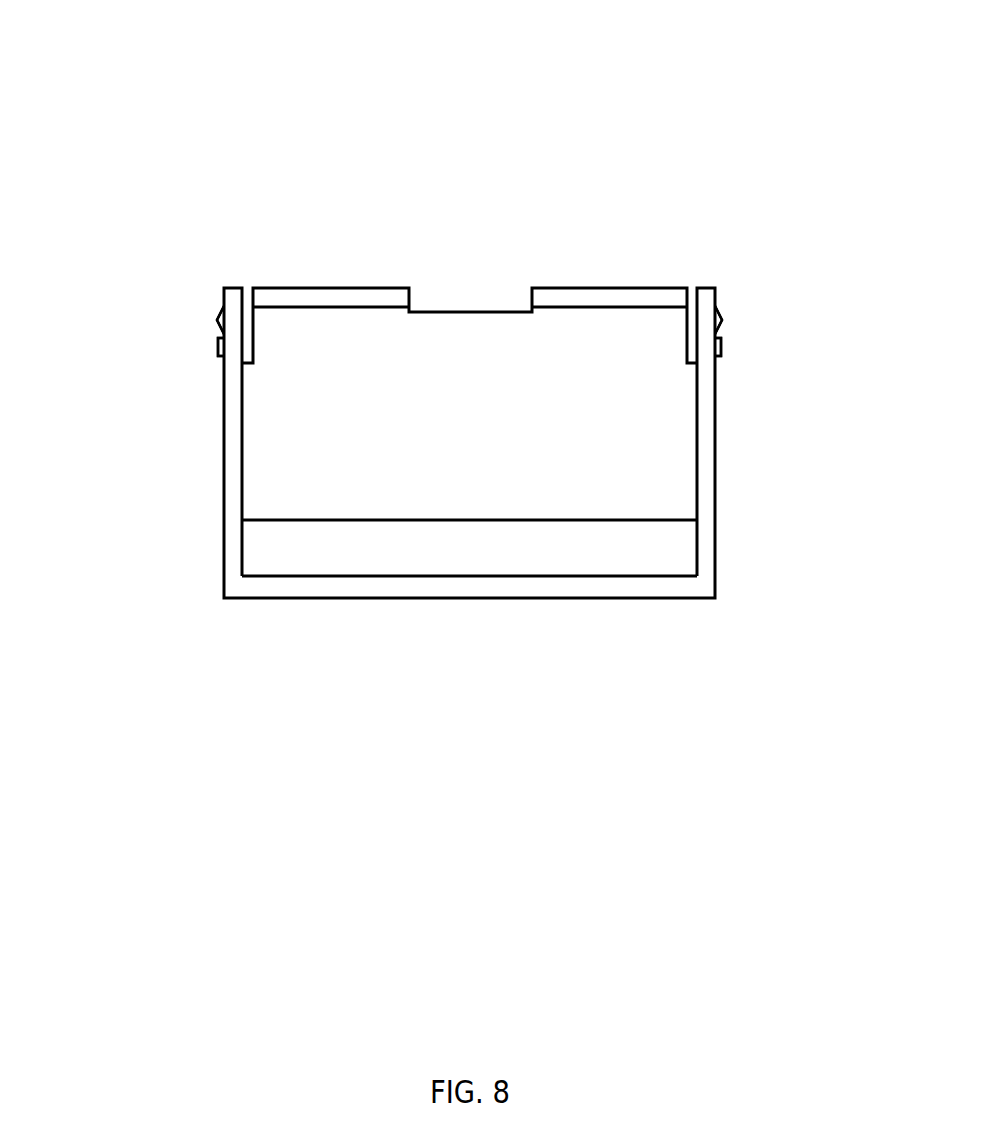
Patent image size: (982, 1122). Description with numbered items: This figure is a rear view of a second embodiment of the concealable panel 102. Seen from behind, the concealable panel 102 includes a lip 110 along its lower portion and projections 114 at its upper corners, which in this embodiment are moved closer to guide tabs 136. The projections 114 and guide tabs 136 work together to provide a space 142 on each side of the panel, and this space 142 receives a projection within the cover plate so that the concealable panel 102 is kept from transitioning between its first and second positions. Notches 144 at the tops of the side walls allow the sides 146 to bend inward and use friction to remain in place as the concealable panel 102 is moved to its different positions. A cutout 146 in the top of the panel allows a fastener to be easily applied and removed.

The concealable panel 102 is at (156, 65).
The lip 110 is at (262, 545).
The projections 114 is at (217, 347).
The guide tabs 136 is at (219, 316).
The space 142 is at (191, 329).
The notches 144 is at (243, 256).
The sides 146 is at (472, 256).